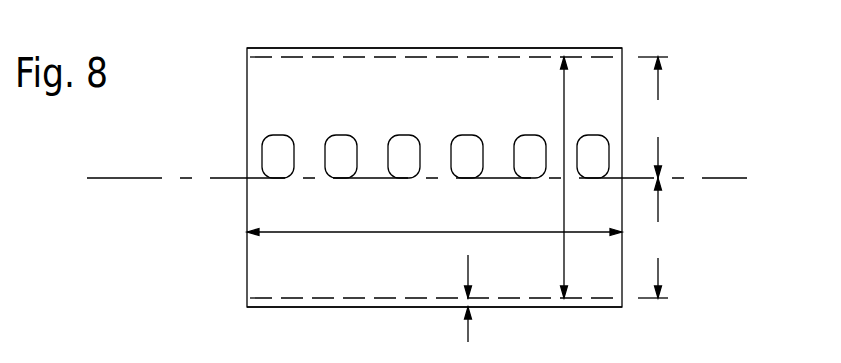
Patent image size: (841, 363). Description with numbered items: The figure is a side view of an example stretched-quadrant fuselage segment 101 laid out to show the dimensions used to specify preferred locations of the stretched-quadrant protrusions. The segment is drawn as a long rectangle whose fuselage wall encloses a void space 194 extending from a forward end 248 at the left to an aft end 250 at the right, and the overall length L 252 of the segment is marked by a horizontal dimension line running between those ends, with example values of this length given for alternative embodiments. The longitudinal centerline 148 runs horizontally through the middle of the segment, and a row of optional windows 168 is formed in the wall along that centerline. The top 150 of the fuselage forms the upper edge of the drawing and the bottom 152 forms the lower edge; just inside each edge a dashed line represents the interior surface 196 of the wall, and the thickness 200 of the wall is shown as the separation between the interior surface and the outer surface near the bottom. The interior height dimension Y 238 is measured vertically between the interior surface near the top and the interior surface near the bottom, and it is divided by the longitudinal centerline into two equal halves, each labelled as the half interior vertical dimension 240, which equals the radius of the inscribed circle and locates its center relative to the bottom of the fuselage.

The stretched-quadrant fuselage segment 101 is at (245, 65).
The longitudinal centerline 148 is at (723, 177).
The top 150 is at (458, 48).
The bottom 152 is at (270, 307).
The windows 168 is at (282, 135).
The void space 194 is at (242, 137).
The interior surface 196 is at (320, 58).
The thickness 200 is at (465, 280).
The interior height dimension Y 238 is at (564, 82).
The half interior vertical dimension Y/2 240 is at (658, 158).
The forward end 248 is at (223, 253).
The aft end 250 is at (678, 265).
The length L 252 is at (308, 231).